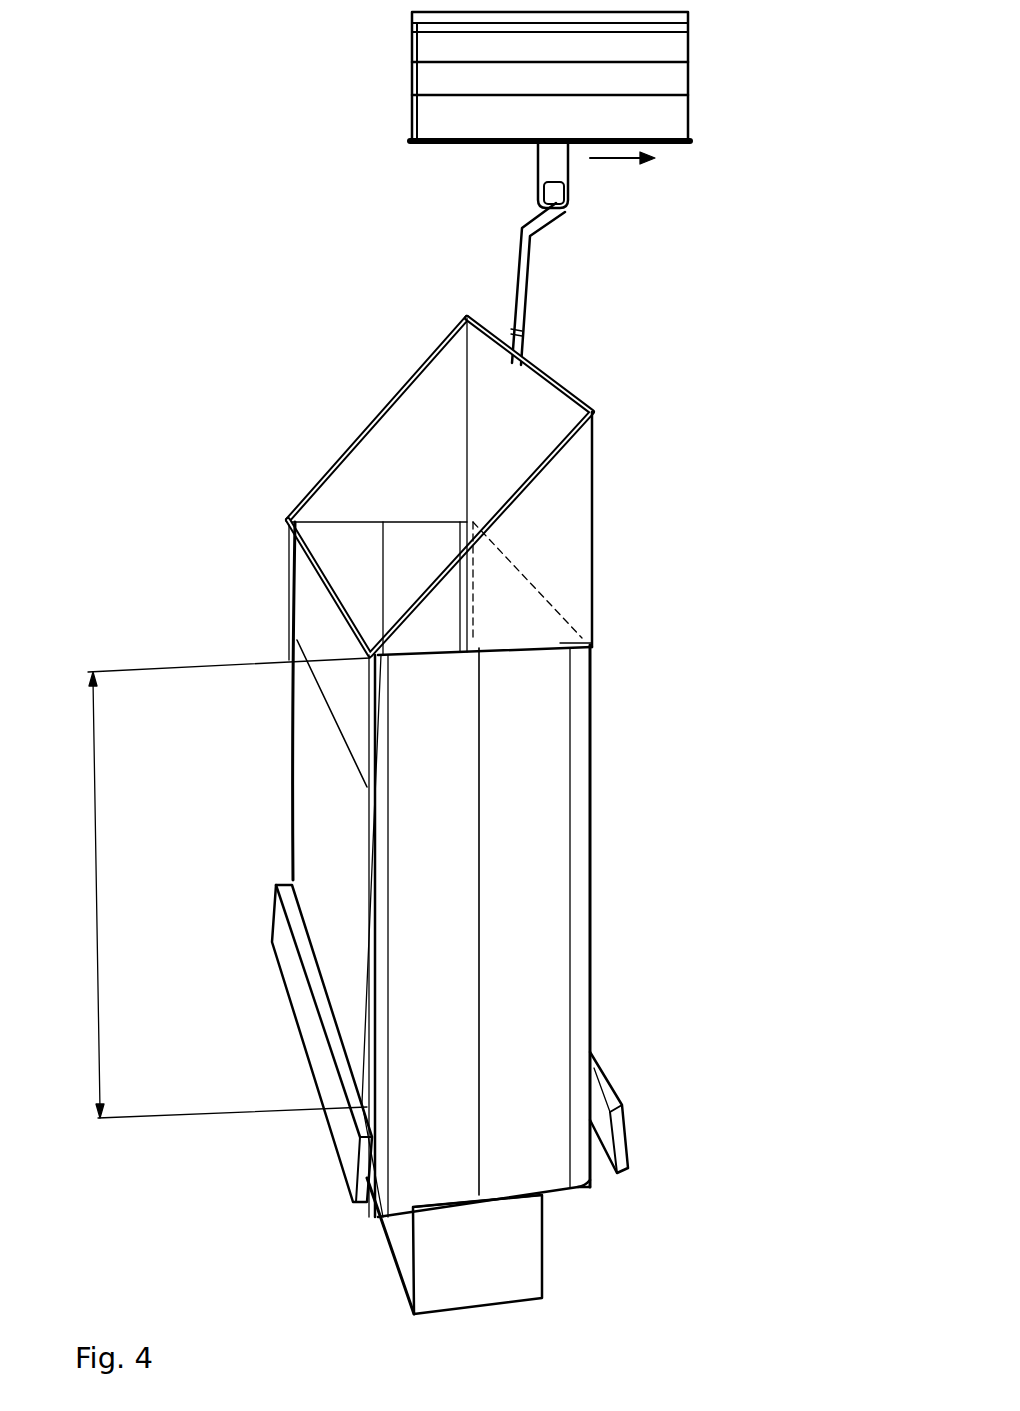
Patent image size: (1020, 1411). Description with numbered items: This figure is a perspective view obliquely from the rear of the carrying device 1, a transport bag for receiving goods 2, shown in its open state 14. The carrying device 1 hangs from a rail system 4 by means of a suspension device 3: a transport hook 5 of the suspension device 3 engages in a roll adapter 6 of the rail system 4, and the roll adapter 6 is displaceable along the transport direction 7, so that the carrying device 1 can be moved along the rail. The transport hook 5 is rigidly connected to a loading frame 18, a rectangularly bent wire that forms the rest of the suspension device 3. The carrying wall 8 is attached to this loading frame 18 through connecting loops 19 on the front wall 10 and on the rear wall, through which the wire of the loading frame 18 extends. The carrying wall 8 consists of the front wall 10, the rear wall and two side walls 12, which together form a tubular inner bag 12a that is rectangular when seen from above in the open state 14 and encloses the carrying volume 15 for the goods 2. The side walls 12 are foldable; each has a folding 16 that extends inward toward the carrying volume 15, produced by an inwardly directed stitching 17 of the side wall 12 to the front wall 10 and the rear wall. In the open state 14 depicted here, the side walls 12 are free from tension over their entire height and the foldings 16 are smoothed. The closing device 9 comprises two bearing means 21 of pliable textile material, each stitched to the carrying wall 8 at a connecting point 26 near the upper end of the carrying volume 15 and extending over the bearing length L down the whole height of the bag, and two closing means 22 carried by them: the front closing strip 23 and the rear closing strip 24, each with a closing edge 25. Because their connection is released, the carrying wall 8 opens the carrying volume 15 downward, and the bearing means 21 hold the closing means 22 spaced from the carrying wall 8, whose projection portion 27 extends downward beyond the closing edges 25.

The carrying device 1 is at (240, 296).
The goods 2 is at (432, 1248).
The suspension device 3 is at (542, 360).
The rail system 4 is at (673, 77).
The transport hook 5 is at (530, 252).
The roll adapter 6 is at (562, 168).
The transport direction 7 is at (606, 159).
The carrying wall 8 is at (463, 488).
The closing device 9 is at (642, 1138).
The front wall 10 is at (594, 515).
The side walls 12 is at (366, 928).
The inner bag 12a is at (425, 1178).
The open state 14 is at (662, 1172).
The carrying volume 15 is at (355, 512).
The folding 16 is at (478, 762).
The stitching 17 is at (372, 1217).
The loading frame 18 is at (397, 395).
The connecting loops 19 is at (592, 410).
The bearing means 21 is at (293, 873).
The closing means 22 is at (468, 1043).
The front closing strip 23 is at (620, 1123).
The rear closing strip 24 is at (317, 1053).
The closing edge 25 is at (598, 1076).
The connecting point 26 is at (582, 622).
The projection portion 27 is at (593, 1180).